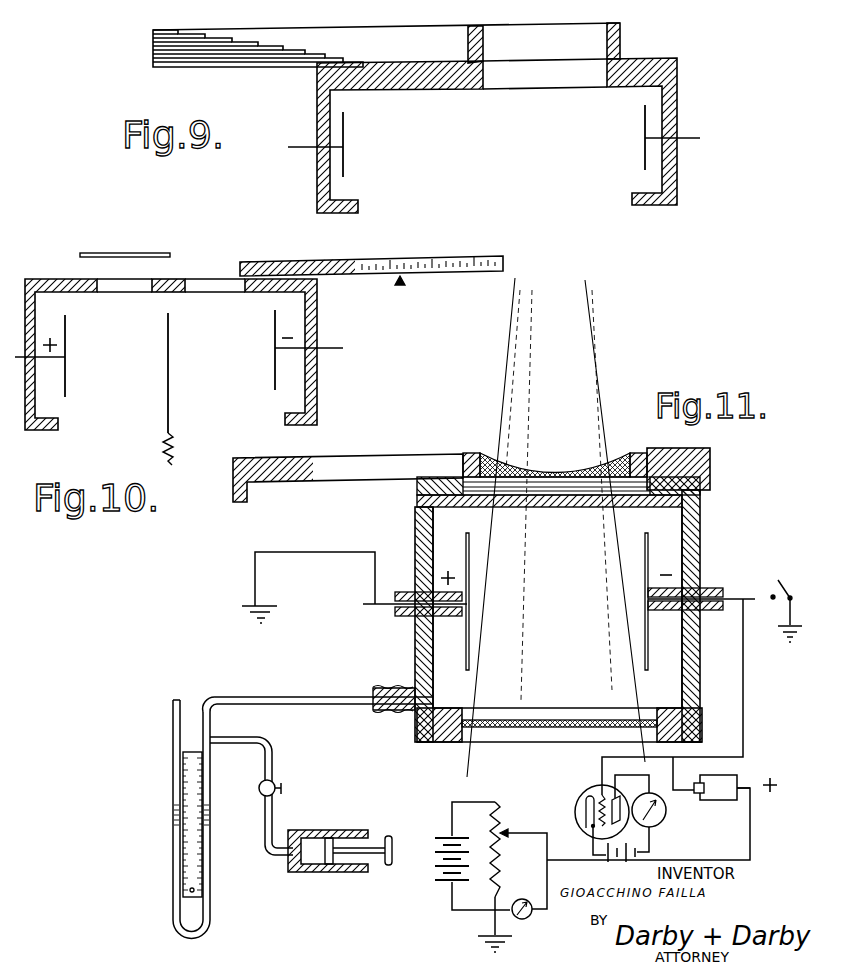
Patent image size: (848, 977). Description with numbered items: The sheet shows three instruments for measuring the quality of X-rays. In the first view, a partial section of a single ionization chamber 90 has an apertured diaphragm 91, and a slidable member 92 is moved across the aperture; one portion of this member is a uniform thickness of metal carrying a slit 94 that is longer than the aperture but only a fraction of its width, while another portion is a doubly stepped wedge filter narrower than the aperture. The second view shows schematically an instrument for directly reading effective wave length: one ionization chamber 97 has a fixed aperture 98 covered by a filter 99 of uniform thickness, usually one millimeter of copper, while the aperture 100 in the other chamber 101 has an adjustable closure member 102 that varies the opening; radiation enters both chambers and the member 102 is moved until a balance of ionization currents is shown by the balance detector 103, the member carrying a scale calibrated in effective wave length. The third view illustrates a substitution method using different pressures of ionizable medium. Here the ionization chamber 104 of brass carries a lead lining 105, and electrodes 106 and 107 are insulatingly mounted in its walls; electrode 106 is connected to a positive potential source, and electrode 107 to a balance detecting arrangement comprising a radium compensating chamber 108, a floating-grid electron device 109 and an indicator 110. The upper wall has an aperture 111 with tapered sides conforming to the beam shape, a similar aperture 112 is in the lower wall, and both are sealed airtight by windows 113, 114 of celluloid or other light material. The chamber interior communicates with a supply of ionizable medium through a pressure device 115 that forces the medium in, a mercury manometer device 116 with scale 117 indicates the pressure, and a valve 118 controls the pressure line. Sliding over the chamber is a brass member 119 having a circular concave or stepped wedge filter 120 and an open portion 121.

In FIG. 9, the ionization chamber 90 is at (317, 111).
In FIG. 9, the apertured diaphragm 91 is at (557, 80).
In FIG. 9, the slidable member 92 is at (622, 34).
In FIG. 9, the slit 94 is at (533, 32).
In FIG. 10, the ionization chamber 97 is at (57, 354).
In FIG. 10, the fixed aperture 98 is at (124, 298).
In FIG. 10, the filter 99 is at (133, 252).
In FIG. 10, the aperture 100 is at (215, 296).
In FIG. 10, the other chamber 101 is at (279, 352).
In FIG. 10, the adjustable closure member 102 is at (291, 260).
In FIG. 10, the balance indicating device 103 is at (178, 438).
In FIG. 11, the ionization chamber 104 is at (702, 524).
In FIG. 11, the lead lining 105 is at (692, 547).
In FIG. 11, the electrode 106 is at (470, 641).
In FIG. 11, the electrode 107 is at (645, 621).
In FIG. 11, the radium compensating chamber 108 is at (715, 801).
In FIG. 11, the floating-grid electron device 109 is at (590, 793).
In FIG. 11, the indicator 110 is at (652, 823).
In FIG. 11, the upper aperture 111 is at (586, 509).
In FIG. 11, the lower aperture 112 is at (497, 716).
In FIG. 11, the window 113 is at (564, 496).
In FIG. 11, the window 114 is at (541, 726).
In FIG. 11, the pressure device 115 is at (347, 832).
In FIG. 11, the mercury manometer device 116 is at (212, 894).
In FIG. 11, the scale 117 is at (185, 781).
In FIG. 11, the valve 118 is at (274, 783).
In FIG. 11, the brass member 119 is at (645, 451).
In FIG. 11, the circular concave or stepped wedge filter 120 is at (594, 468).
In FIG. 11, the open portion 121 is at (376, 456).